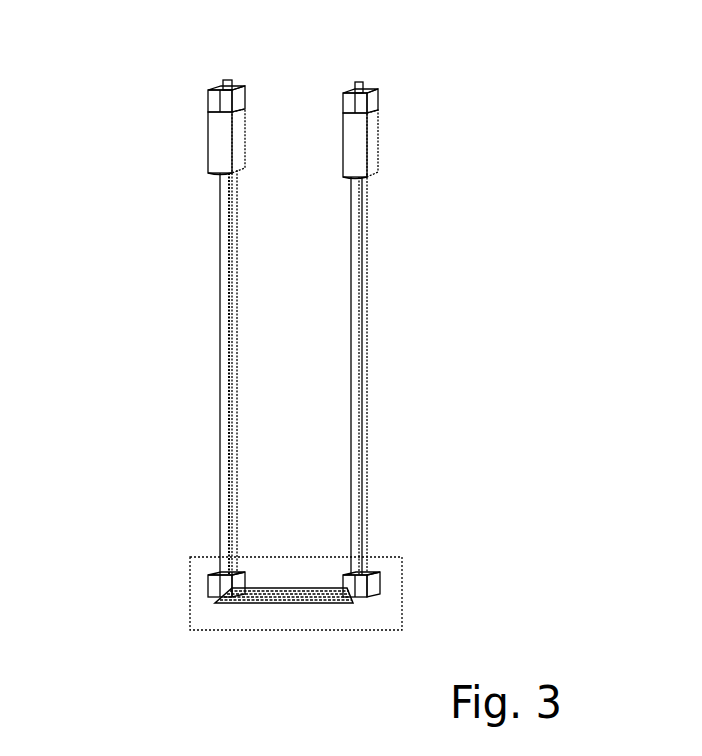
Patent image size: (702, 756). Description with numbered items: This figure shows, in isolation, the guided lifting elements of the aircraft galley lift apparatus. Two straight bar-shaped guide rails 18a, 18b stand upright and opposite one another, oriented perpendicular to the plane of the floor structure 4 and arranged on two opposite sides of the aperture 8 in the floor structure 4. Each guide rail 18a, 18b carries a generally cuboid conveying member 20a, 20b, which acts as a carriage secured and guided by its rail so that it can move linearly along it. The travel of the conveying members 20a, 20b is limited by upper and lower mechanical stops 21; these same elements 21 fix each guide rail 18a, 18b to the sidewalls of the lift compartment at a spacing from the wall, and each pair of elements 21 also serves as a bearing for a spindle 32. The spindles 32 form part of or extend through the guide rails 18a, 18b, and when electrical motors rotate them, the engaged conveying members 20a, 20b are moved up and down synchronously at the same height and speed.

The floor structure 4 is at (393, 568).
The aperture 8 is at (292, 598).
The guide rail 18a is at (368, 230).
The guide rail 18b is at (227, 338).
The conveying member 20a is at (370, 150).
The conveying member 20b is at (217, 160).
The mechanical stop 21 is at (217, 95).
The spindle 32 is at (226, 80).